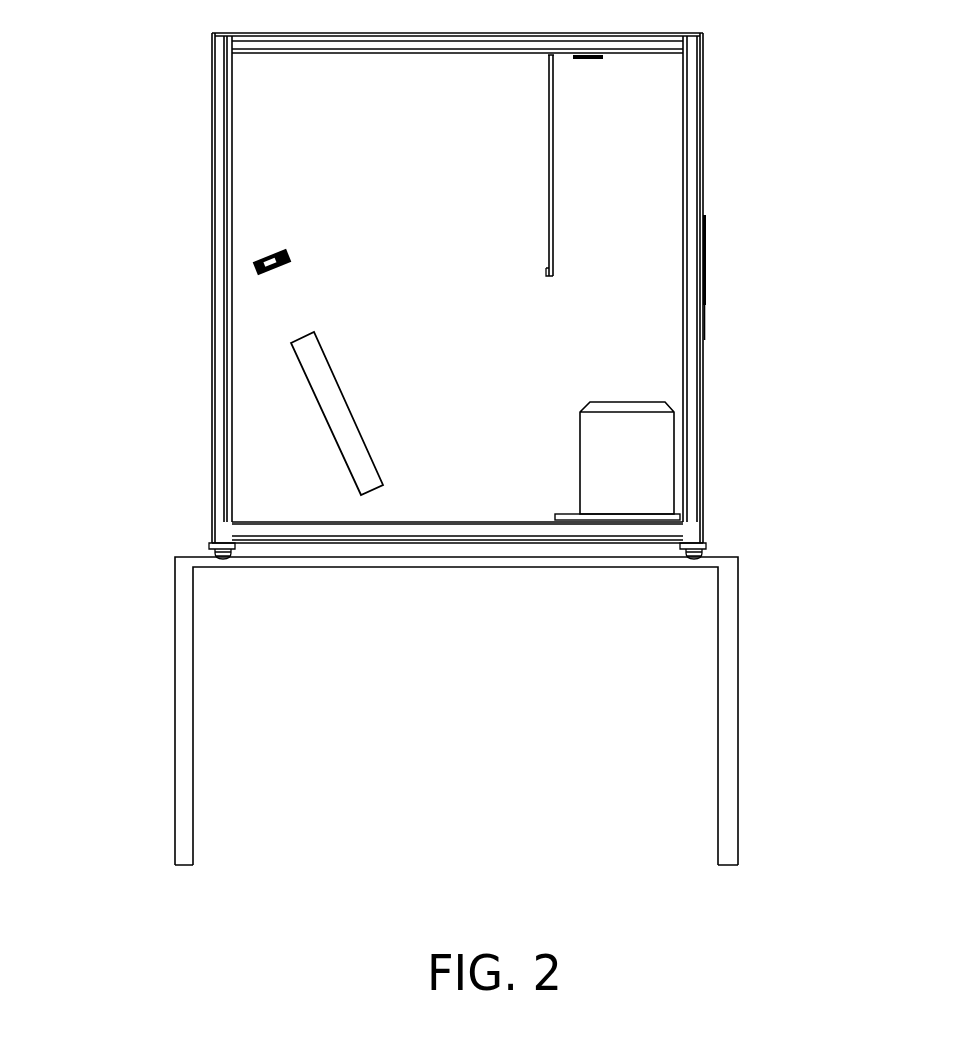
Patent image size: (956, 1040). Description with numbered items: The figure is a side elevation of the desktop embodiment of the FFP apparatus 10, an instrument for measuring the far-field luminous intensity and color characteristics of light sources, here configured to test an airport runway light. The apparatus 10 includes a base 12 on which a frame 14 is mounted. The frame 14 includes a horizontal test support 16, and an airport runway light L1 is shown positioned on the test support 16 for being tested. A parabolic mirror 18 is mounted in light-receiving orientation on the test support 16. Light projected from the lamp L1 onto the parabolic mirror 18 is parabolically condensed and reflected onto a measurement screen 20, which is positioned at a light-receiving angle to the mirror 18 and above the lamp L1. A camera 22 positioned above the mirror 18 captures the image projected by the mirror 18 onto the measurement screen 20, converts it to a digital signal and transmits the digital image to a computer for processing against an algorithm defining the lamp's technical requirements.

The FFP apparatus 10 is at (125, 141).
The base 12 is at (190, 557).
The frame 14 is at (218, 305).
The horizontal test support 16 is at (262, 522).
The parabolic mirror 18 is at (315, 390).
The measurement screen 20 is at (555, 120).
The camera 22 is at (270, 250).
The airport runway light L1 is at (622, 448).